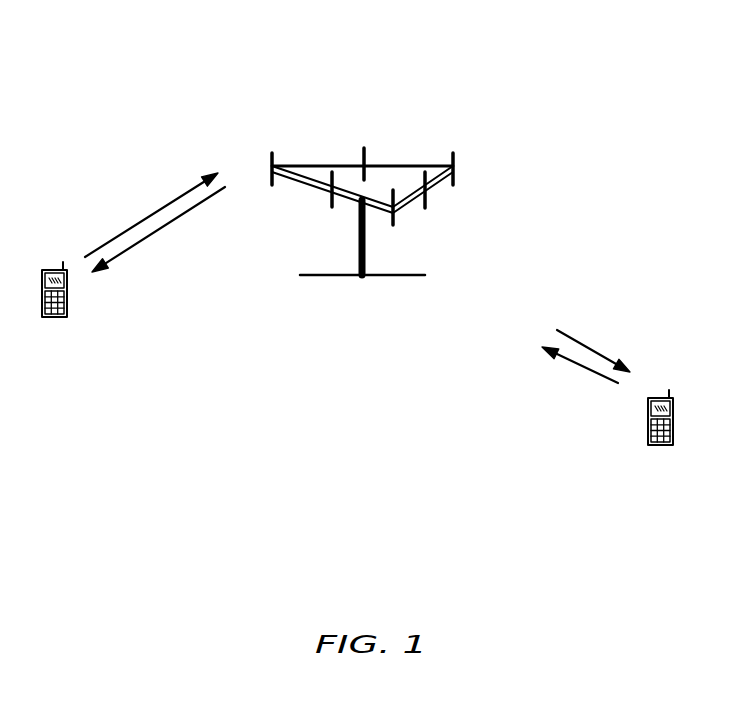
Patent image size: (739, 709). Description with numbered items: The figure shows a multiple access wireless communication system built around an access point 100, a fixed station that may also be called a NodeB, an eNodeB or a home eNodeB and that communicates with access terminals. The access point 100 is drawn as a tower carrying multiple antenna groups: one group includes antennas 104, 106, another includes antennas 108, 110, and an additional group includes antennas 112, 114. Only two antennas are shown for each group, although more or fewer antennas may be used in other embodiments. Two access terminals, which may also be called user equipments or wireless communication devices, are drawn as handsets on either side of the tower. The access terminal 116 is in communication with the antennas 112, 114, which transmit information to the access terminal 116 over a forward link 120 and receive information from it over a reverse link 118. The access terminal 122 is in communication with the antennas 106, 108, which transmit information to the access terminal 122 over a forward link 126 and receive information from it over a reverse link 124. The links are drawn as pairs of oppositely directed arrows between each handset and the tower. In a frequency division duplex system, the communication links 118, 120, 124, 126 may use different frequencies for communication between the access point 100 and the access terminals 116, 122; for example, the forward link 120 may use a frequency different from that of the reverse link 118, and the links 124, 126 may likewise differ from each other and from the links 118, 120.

The access point 100 is at (342, 275).
The antenna 104 is at (393, 222).
The antenna 106 is at (425, 206).
The antenna 108 is at (455, 179).
The antenna 110 is at (364, 149).
The antenna 112 is at (274, 162).
The antenna 114 is at (332, 207).
The access terminal 116 is at (55, 270).
The reverse link 118 is at (148, 216).
The forward link 120 is at (167, 224).
The access terminal 122 is at (662, 398).
The reverse link 124 is at (568, 360).
The forward link 126 is at (598, 353).